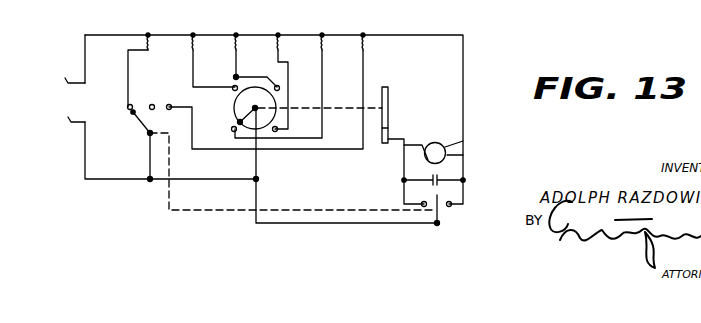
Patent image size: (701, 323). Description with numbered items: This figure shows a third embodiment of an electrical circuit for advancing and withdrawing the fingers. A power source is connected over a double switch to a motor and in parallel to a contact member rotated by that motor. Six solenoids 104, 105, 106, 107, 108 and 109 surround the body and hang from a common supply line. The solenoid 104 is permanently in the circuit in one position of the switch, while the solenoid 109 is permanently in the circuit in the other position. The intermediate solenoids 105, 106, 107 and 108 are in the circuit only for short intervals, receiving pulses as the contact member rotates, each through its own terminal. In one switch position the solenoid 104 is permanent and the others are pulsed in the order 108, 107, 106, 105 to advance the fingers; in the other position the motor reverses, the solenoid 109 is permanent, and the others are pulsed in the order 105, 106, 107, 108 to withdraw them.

The solenoid 104 is at (158, 21).
The solenoid 105 is at (208, 21).
The solenoid 106 is at (243, 35).
The solenoid 107 is at (294, 35).
The solenoid 108 is at (333, 35).
The solenoid 109 is at (380, 35).